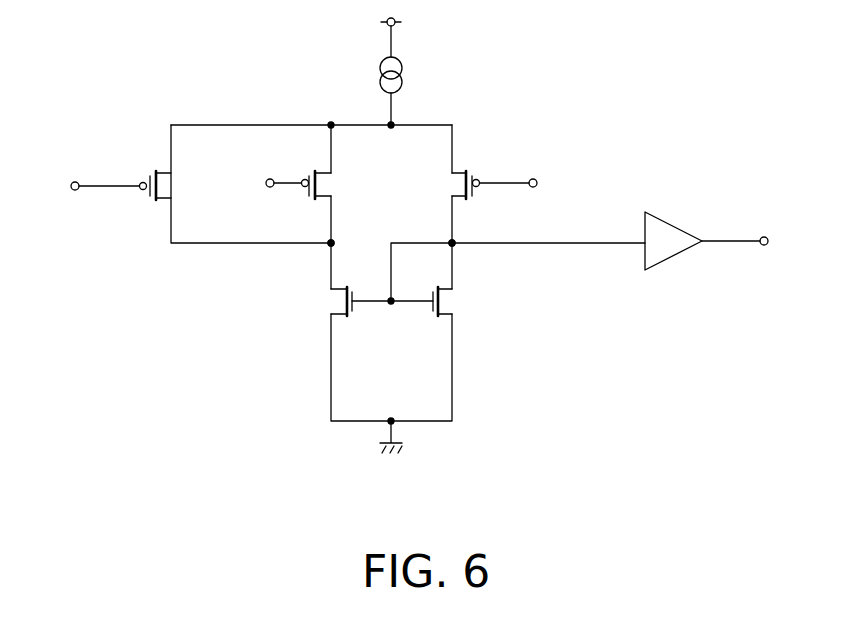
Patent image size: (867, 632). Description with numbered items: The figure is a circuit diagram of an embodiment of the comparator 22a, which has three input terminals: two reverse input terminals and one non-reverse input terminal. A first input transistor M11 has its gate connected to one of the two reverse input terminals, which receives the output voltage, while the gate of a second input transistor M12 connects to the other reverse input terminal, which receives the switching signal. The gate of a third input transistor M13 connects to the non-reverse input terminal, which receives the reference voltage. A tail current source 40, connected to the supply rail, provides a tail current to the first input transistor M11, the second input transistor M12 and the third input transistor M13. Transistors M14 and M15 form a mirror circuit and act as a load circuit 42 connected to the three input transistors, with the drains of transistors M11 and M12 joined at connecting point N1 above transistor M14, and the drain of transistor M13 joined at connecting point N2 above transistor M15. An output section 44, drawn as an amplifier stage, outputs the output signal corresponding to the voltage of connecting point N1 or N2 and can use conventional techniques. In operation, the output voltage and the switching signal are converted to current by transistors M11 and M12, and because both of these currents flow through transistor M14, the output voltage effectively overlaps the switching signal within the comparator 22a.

The comparator 22a is at (427, 269).
The tail current source 40 is at (402, 70).
The load circuit 42 is at (444, 364).
The output section 44 is at (671, 258).
The first input transistor M11 is at (334, 184).
The second input transistor M12 is at (176, 185).
The third input transistor M13 is at (452, 187).
The transistor M14 is at (350, 321).
The transistor M15 is at (436, 321).
The connecting point N1 is at (326, 250).
The connecting point N2 is at (458, 250).